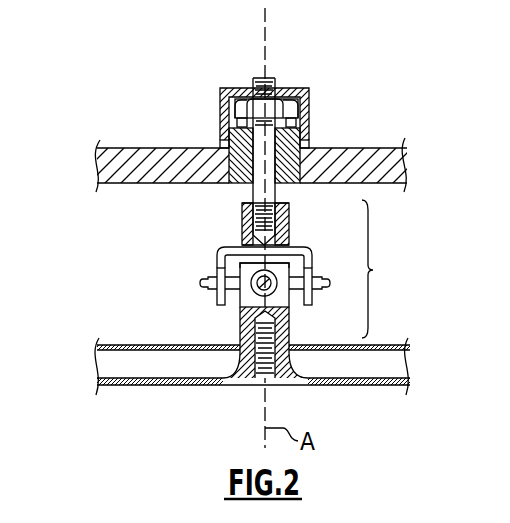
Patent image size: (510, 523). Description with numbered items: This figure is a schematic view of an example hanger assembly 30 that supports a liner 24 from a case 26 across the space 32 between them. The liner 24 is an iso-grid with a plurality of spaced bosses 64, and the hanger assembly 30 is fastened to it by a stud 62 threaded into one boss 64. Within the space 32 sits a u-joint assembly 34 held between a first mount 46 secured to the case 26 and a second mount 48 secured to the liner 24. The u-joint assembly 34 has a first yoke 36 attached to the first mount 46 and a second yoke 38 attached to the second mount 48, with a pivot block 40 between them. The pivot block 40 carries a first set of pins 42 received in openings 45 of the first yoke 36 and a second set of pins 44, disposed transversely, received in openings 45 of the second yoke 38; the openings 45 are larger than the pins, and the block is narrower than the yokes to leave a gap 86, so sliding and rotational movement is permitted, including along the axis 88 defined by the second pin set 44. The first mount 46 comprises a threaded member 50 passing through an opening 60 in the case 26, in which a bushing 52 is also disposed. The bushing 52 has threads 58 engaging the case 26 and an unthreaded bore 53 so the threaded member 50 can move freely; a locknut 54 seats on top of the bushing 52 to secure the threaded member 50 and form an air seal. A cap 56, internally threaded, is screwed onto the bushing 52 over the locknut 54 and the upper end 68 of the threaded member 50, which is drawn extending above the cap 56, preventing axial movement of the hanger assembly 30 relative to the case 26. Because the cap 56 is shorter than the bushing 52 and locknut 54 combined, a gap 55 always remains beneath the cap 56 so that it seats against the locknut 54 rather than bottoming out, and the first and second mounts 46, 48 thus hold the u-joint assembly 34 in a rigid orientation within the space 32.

The hanger assembly 30 is at (388, 65).
The case 26 is at (148, 162).
The liner 24 is at (150, 360).
The space 32 is at (149, 279).
The u-joint assembly 34 is at (381, 269).
The first yoke 36 is at (314, 222).
The second yoke 38 is at (287, 300).
The pivot block 40 is at (291, 263).
The first set of pins 42 is at (207, 287).
The second set of pins 44 is at (258, 288).
The openings 45 is at (306, 284).
The first mount 46 is at (200, 209).
The second mount 48 is at (229, 332).
The threaded member 50 is at (218, 143).
The bushing 52 is at (313, 148).
The bore 53 is at (223, 167).
The locknut 54 is at (316, 125).
The gap 55 is at (313, 141).
The cap 56 is at (300, 93).
The threads 58 is at (314, 166).
The opening 60 is at (302, 188).
The stud 62 is at (288, 372).
The boss 64 is at (292, 357).
The threaded bolt 68 is at (273, 80).
The gap 86 is at (226, 254).
The axis 88 is at (180, 283).